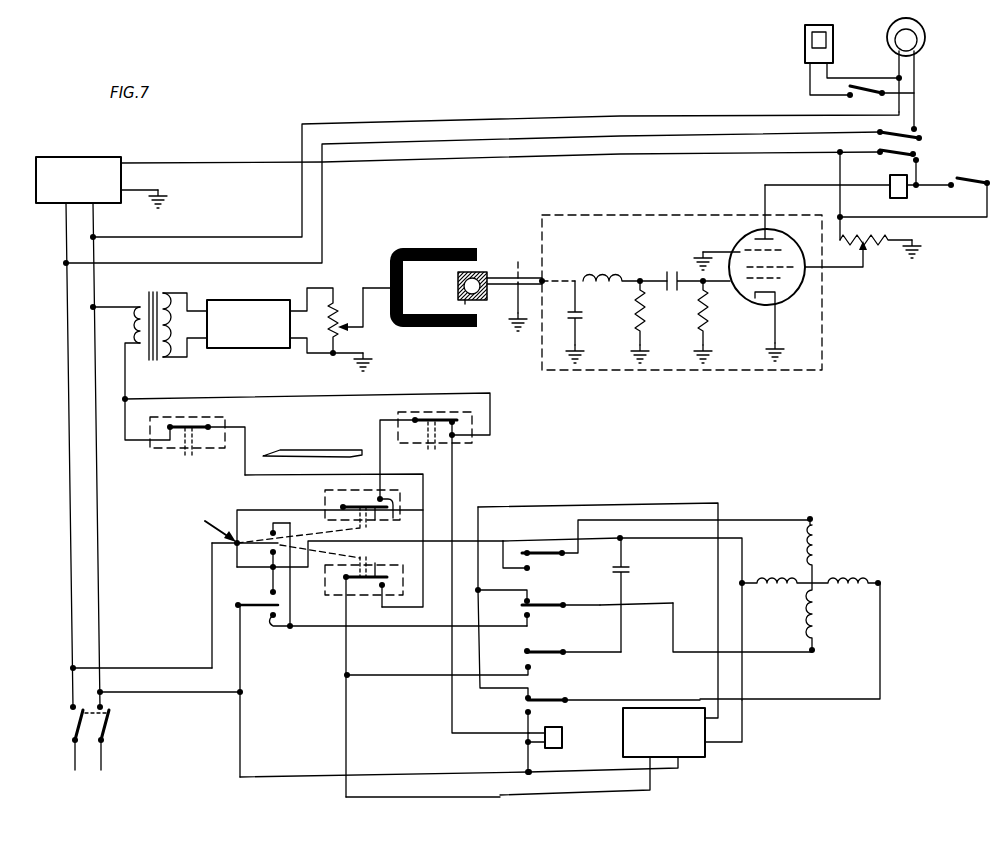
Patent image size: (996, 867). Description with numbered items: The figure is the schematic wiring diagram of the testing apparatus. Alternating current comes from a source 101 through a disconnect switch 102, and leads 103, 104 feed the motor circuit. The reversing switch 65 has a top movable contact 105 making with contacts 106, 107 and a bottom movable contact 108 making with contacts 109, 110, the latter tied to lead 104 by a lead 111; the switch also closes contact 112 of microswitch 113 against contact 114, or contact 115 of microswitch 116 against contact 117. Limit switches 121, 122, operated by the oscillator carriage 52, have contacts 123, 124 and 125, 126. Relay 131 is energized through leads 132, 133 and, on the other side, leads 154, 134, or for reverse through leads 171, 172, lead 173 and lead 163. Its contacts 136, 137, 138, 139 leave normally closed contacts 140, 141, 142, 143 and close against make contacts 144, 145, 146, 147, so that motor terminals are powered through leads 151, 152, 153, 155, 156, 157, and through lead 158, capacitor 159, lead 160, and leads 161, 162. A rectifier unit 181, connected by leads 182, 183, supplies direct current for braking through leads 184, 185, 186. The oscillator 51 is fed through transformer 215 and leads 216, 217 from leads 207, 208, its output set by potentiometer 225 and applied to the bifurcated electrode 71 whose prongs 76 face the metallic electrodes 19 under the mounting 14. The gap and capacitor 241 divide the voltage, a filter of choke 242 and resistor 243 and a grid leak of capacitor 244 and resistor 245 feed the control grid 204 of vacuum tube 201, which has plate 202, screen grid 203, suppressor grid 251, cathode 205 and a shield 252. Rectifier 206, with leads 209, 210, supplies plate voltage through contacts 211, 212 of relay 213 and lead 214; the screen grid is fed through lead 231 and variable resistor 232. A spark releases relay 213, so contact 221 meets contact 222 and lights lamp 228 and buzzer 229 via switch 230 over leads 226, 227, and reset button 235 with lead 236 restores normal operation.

The mounting 14 is at (484, 272).
The metallic electrodes 19 is at (481, 304).
The oscillator 51 is at (265, 349).
The oscillator carriage 52 is at (321, 449).
The reversing switch 65 is at (231, 529).
The bifurcated electrode 71 is at (394, 259).
The prongs 76 is at (447, 247).
The source 101 is at (78, 770).
The disconnect switch 102 is at (106, 727).
The lead 103 is at (173, 665).
The lead 104 is at (155, 694).
The top movable contact 105 is at (270, 553).
The contact 106 is at (271, 533).
The contact 107 is at (370, 561).
The bottom movable contact 108 is at (253, 607).
The contact 109 is at (271, 594).
The contact 110 is at (272, 629).
The lead 111 is at (241, 680).
The contact 112 is at (377, 524).
The microswitch 113 is at (324, 492).
The contact 114 is at (402, 520).
The contact 115 is at (381, 568).
The microswitch 116 is at (322, 587).
The contact 117 is at (382, 586).
The limit switch 121 is at (230, 418).
The limit switch 122 is at (400, 417).
The contact 123 is at (197, 418).
The contact 124 is at (170, 429).
The contact 125 is at (434, 418).
The contact 126 is at (450, 425).
The relay 131 is at (562, 736).
The lead 132 is at (262, 508).
The lead 133 is at (453, 490).
The lead 134 is at (410, 775).
The relay contact 136 is at (564, 701).
The relay contact 137 is at (562, 653).
The relay contact 138 is at (564, 603).
The relay contact 139 is at (563, 555).
The normally closed contact 140 is at (526, 699).
The normally closed contact 141 is at (527, 650).
The normally closed contact 142 is at (529, 601).
The normally closed contact 143 is at (525, 552).
The make contact 144 is at (526, 713).
The make contact 145 is at (530, 669).
The make contact 146 is at (530, 615).
The make contact 147 is at (529, 569).
The lead 151 is at (784, 517).
The lead 152 is at (464, 540).
The lead 153 is at (813, 699).
The lead 154 is at (527, 758).
The lead 155 is at (676, 654).
The lead 156 is at (408, 626).
The lead 157 is at (290, 523).
The lead 158 is at (680, 539).
The capacitor 159 is at (631, 563).
The lead 160 is at (625, 601).
The lead 161 is at (385, 676).
The lead 162 is at (351, 659).
The lead 163 is at (236, 567).
The lead 171 is at (320, 397).
The lead 172 is at (121, 436).
The lead 173 is at (244, 474).
The rectifier unit 181 is at (698, 750).
The lead 182 is at (651, 789).
The lead 183 is at (623, 773).
The lead 184 is at (746, 714).
The lead 185 is at (673, 504).
The lead 186 is at (479, 684).
The vacuum tube 201 is at (739, 296).
The plate 202 is at (773, 234).
The screen grid 203 is at (782, 268).
The control grid 204 is at (780, 284).
The cathode 205 is at (780, 304).
The rectifier 206 is at (102, 155).
The lead 207 is at (68, 470).
The lead 208 is at (102, 475).
The lead 209 is at (161, 191).
The lead 210 is at (243, 160).
The contact 211 is at (916, 157).
The contact 212 is at (919, 164).
The relay 213 is at (900, 198).
The lead 214 is at (861, 186).
The transformer 215 is at (159, 298).
The lead 216 is at (117, 308).
The lead 217 is at (126, 372).
The contact 221 is at (920, 140).
The contact 222 is at (917, 127).
The potentiometer 225 is at (368, 321).
The lead 226 is at (633, 116).
The lead 227 is at (323, 178).
The lamp 228 is at (924, 42).
The buzzer 229 is at (804, 56).
The switch 230 is at (848, 98).
The lead 231 is at (840, 180).
The variable resistor 232 is at (897, 240).
The reset button 235 is at (969, 195).
The lead 236 is at (939, 215).
The capacitor 241 is at (580, 321).
The high frequency choke 242 is at (613, 274).
The resistor 243 is at (645, 320).
The capacitor 244 is at (667, 270).
The resistor 245 is at (710, 320).
The suppressor grid 251 is at (747, 250).
The shield 252 is at (516, 288).